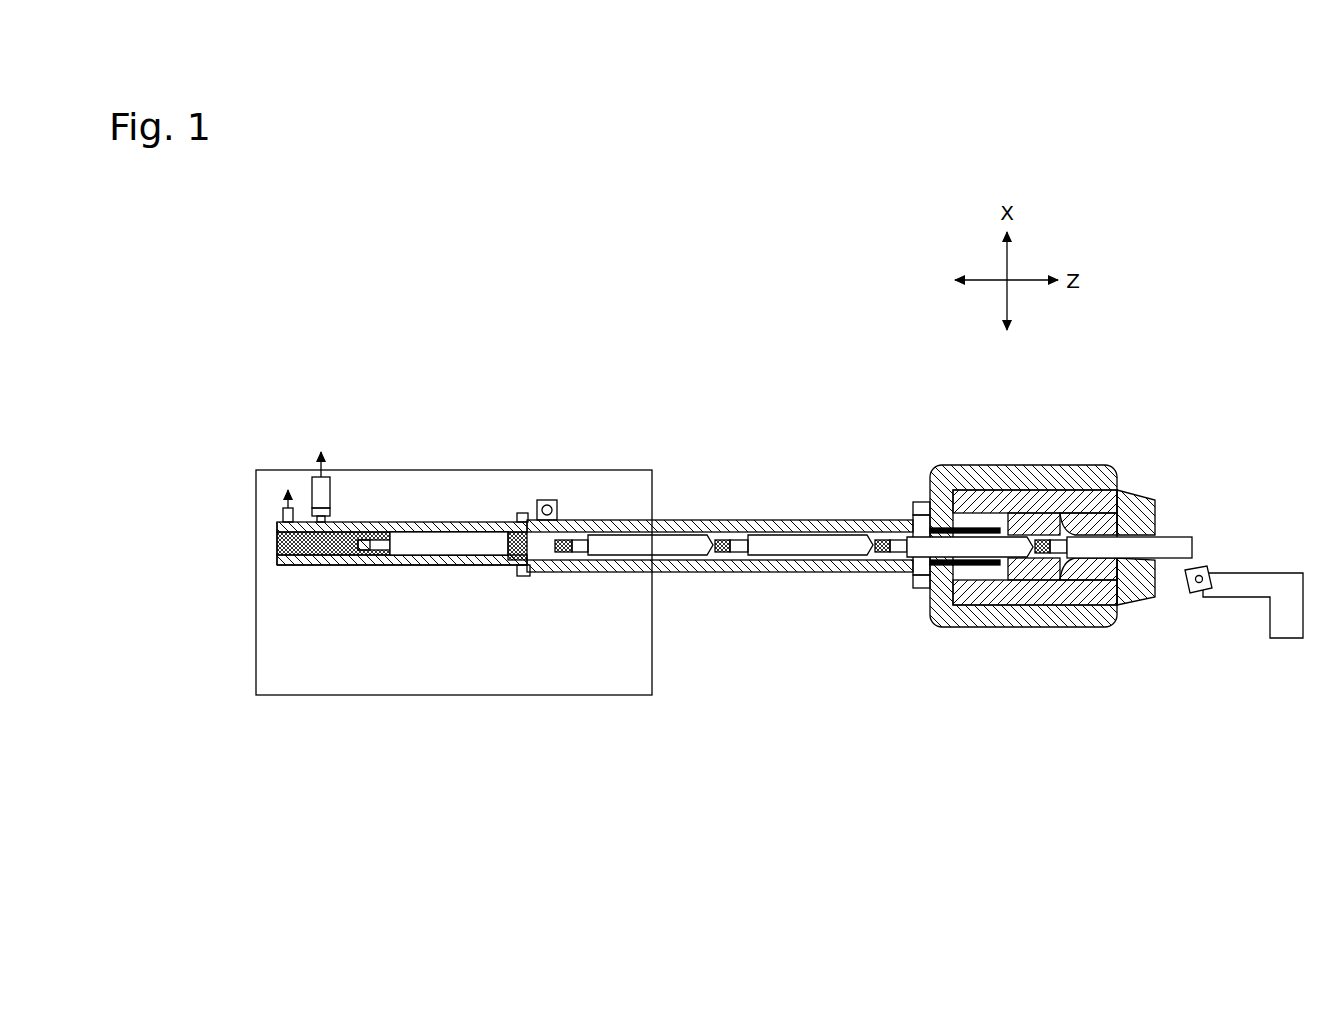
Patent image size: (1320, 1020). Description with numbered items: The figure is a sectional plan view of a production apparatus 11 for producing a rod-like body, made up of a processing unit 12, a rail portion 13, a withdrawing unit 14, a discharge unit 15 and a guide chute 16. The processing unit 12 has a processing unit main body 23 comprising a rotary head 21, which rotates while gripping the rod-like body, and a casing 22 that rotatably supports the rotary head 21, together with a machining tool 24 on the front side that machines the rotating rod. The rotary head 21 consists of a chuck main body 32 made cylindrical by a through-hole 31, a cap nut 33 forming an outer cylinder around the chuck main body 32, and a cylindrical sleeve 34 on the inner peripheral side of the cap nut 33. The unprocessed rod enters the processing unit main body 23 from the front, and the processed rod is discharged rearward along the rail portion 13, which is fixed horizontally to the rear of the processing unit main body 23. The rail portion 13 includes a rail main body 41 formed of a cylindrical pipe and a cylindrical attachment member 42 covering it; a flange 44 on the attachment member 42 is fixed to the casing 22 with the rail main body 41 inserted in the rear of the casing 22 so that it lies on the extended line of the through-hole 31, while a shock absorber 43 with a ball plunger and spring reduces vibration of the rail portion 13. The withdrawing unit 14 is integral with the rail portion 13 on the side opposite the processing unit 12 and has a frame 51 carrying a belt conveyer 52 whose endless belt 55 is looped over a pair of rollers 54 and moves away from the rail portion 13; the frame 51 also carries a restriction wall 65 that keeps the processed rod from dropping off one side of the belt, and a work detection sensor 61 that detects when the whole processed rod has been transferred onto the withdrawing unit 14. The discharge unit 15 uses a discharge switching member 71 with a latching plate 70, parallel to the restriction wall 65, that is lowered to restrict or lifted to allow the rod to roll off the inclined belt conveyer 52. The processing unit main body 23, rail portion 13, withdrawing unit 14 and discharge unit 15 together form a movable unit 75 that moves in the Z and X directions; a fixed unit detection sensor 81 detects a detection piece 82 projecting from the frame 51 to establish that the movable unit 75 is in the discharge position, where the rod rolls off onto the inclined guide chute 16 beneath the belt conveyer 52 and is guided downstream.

The production apparatus 11 is at (1174, 360).
The processing unit 12 is at (1239, 617).
The rail portion 13 is at (784, 518).
The withdrawing unit 14 is at (404, 519).
The discharge unit 15 is at (395, 569).
The guide chute 16 is at (622, 680).
The rotary head 21 is at (1048, 484).
The casing 22 is at (1010, 620).
The processing unit main body 23 is at (1098, 466).
The machining tool 24 is at (1197, 567).
The through-hole 31 is at (1097, 540).
The chuck main body 32 is at (1132, 598).
The cap nut 33 is at (1148, 586).
The sleeve 34 is at (1047, 600).
The rail main body 41 is at (970, 590).
The attachment member 42 is at (773, 573).
The shock absorber 43 is at (548, 500).
The flange 44 is at (920, 592).
The frame 51 is at (485, 521).
The belt conveyer 52 is at (338, 567).
The roller 54 is at (292, 567).
The endless belt 55 is at (320, 567).
The work detection sensor 61 is at (283, 517).
The restriction wall 65 is at (447, 521).
The latching plate 70 is at (465, 567).
The discharge switching member 71 is at (427, 567).
The movable unit 75 is at (903, 476).
The unit detection sensor 81 is at (313, 495).
The detection piece 82 is at (328, 513).